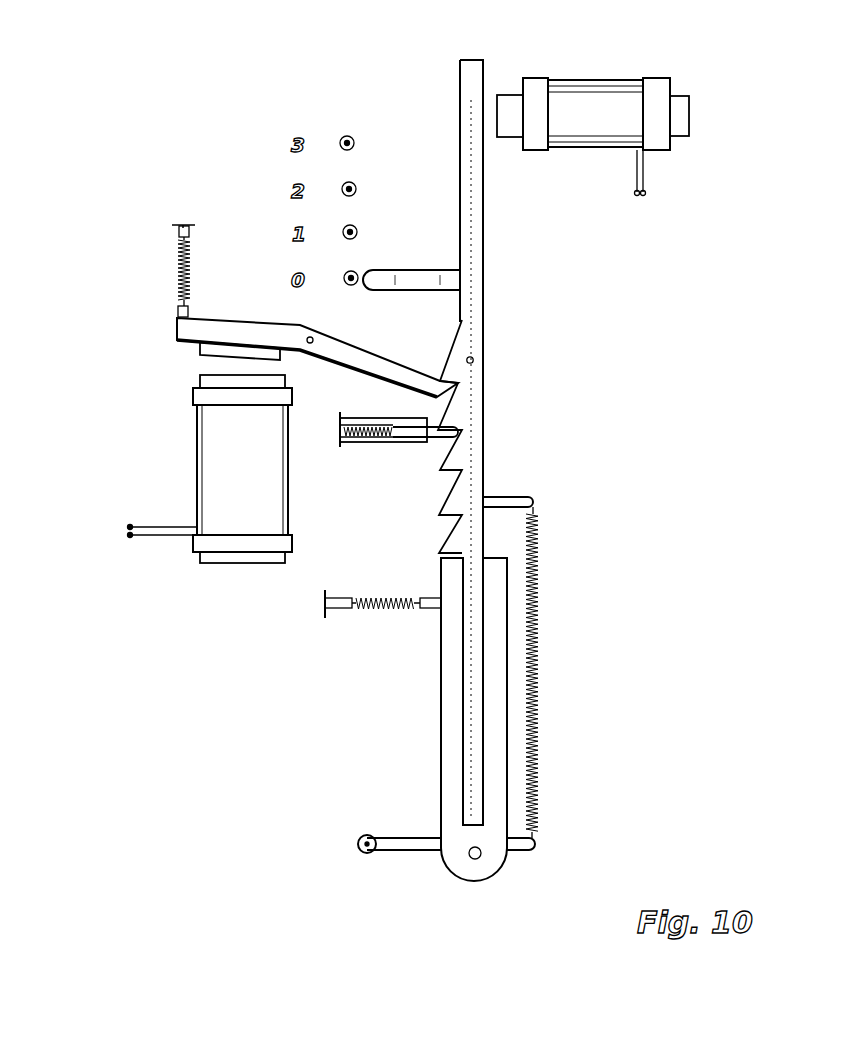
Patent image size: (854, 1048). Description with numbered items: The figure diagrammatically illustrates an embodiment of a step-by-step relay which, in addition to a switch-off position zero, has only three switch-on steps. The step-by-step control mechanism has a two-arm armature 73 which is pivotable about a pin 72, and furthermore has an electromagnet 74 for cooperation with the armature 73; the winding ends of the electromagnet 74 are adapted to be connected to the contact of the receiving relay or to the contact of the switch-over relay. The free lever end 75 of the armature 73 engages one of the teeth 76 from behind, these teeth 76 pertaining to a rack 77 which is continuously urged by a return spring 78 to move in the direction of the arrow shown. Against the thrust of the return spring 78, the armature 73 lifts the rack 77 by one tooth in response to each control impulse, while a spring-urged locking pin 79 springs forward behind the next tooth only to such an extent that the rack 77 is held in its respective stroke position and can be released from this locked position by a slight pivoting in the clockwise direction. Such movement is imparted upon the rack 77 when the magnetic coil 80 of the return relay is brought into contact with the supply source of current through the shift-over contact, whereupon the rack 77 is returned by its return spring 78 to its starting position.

The pin 72 is at (316, 338).
The two-arm armature 73 is at (224, 338).
The electromagnet 74 is at (218, 443).
The free lever end 75 is at (405, 372).
The teeth 76 is at (453, 452).
The rack 77 is at (474, 358).
The return spring 78 is at (536, 605).
The spring-urged locking pin 79 is at (374, 433).
The magnetic coil 80 is at (578, 100).